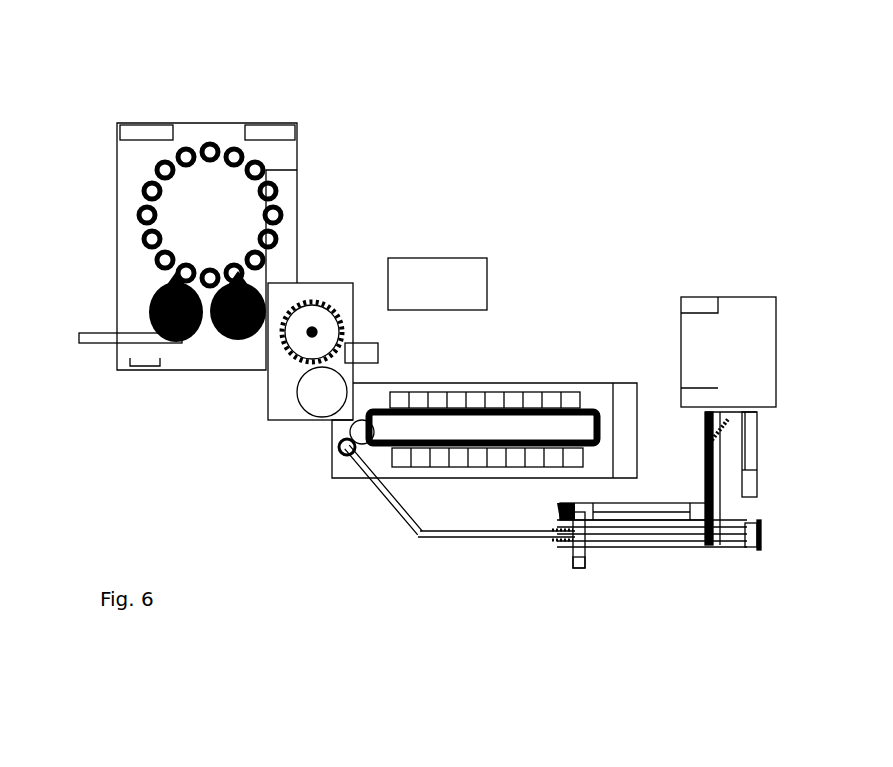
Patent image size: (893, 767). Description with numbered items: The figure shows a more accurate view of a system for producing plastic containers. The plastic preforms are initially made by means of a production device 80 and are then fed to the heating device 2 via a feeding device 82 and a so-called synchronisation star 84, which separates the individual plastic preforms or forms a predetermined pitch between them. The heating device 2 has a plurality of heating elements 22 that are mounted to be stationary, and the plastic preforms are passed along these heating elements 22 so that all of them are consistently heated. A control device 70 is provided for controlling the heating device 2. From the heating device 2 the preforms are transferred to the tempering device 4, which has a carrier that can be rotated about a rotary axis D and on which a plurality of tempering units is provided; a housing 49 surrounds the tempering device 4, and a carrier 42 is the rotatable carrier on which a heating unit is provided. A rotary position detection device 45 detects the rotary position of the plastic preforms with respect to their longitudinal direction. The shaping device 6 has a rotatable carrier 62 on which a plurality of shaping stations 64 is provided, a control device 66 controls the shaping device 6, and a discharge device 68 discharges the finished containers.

The heating device 2 is at (535, 364).
The tempering device 4 is at (330, 268).
The shaping device 6 is at (342, 132).
The heating elements 22 is at (568, 398).
The carrier 42 is at (312, 332).
The rotary position detection device 45 is at (367, 352).
The housing 49 is at (303, 420).
The rotatable carrier 62 is at (218, 218).
The shaping stations 64 is at (130, 202).
The control device 66 is at (157, 132).
The discharge device 68 is at (98, 343).
The control device 70 is at (455, 273).
The production device 80 is at (735, 323).
The feeding device 82 is at (423, 537).
The synchronisation star 84 is at (347, 455).
The rotary axis D is at (312, 332).